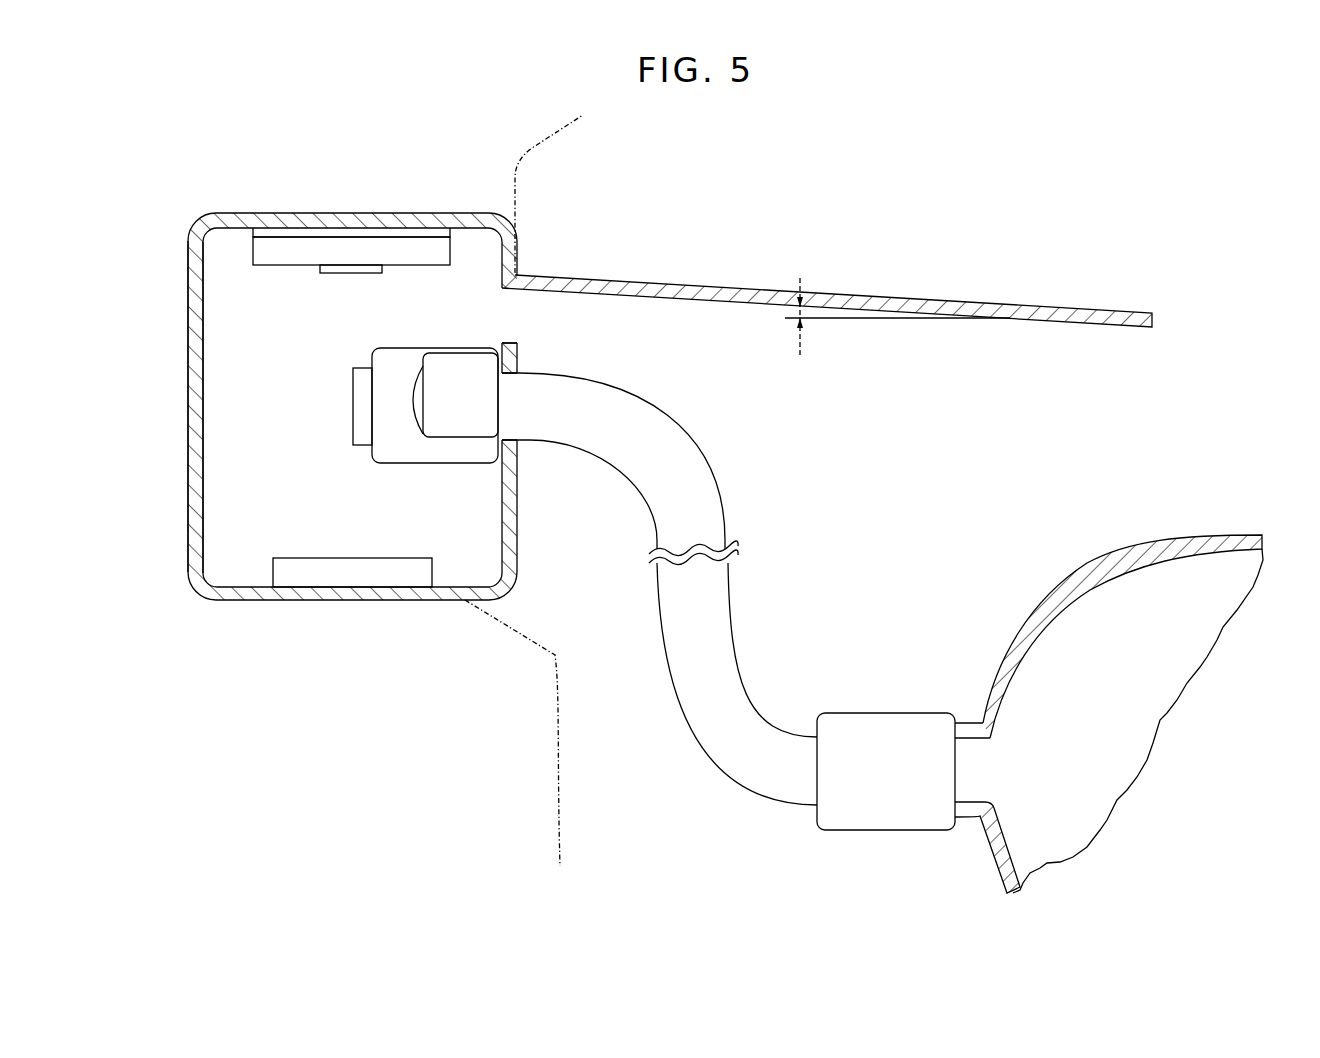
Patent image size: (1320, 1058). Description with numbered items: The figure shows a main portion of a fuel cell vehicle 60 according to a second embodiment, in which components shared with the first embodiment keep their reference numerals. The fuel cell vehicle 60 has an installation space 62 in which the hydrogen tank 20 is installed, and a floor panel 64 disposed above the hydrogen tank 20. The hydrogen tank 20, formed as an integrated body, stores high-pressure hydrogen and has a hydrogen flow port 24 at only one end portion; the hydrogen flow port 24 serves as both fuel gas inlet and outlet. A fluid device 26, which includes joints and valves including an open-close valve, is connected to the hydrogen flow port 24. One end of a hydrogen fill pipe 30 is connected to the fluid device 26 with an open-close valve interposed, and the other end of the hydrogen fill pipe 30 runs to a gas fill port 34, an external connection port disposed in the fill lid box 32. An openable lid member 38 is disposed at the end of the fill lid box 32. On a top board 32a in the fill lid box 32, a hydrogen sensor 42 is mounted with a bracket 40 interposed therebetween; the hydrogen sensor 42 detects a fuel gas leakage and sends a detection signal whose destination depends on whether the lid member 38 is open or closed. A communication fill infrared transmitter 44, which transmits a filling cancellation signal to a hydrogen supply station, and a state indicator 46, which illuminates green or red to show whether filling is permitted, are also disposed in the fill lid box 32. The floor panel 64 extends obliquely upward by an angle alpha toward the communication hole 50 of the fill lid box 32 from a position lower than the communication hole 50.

The hydrogen tank 20 is at (1160, 538).
The hydrogen flow port 24 is at (965, 797).
The fluid device 26 is at (850, 723).
The hydrogen fill pipe 30 is at (686, 436).
The fill lid box 32 is at (203, 593).
The top board 32a is at (306, 237).
The gas fill port 34 is at (380, 417).
The lid member 38 is at (190, 478).
The bracket 40 is at (418, 230).
The hydrogen sensor 42 is at (398, 258).
The communication fill infrared transmitter 44 is at (462, 434).
The state indicator 46 is at (343, 566).
The communication hole 50 is at (508, 315).
The fuel cell vehicle 60 is at (340, 169).
The installation space 62 is at (898, 390).
The floor panel 64 is at (692, 290).